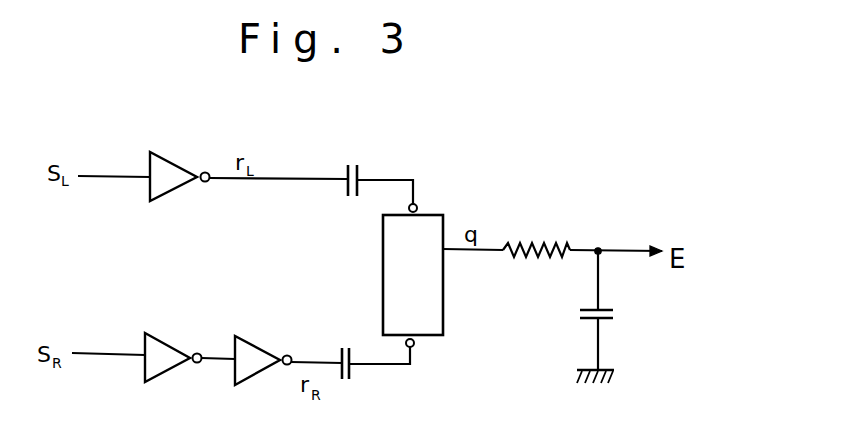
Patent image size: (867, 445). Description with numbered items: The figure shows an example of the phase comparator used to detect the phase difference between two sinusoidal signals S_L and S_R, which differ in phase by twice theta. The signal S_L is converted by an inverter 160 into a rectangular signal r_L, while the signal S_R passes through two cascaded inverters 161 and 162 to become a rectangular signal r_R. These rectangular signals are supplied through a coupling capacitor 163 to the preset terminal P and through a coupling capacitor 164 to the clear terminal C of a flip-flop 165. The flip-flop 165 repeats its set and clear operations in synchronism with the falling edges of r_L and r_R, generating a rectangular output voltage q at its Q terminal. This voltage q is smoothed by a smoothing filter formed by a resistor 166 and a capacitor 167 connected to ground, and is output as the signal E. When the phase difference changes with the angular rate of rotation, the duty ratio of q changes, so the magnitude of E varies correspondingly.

The inverter 160 is at (177, 163).
The inverter 161 is at (170, 341).
The inverter 162 is at (260, 341).
The coupling capacitor 163 is at (354, 163).
The coupling capacitor 164 is at (341, 345).
The flip-flop 165 is at (443, 300).
The resistor 166 is at (540, 238).
The capacitor 167 is at (620, 314).